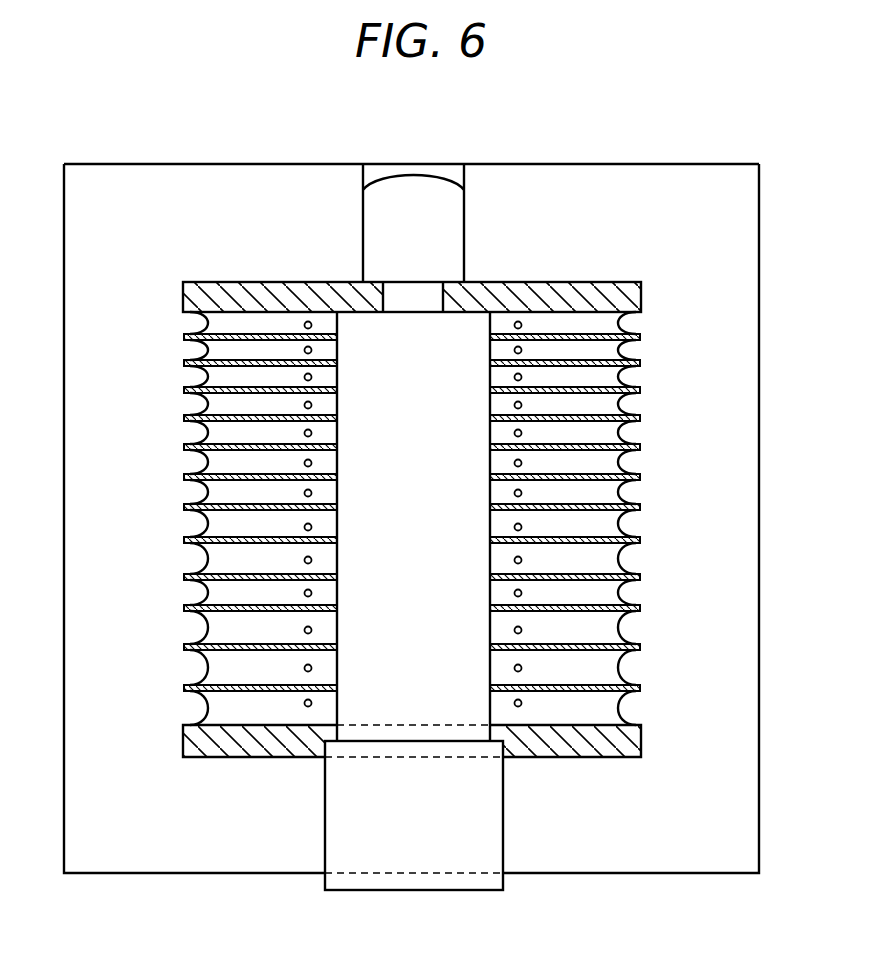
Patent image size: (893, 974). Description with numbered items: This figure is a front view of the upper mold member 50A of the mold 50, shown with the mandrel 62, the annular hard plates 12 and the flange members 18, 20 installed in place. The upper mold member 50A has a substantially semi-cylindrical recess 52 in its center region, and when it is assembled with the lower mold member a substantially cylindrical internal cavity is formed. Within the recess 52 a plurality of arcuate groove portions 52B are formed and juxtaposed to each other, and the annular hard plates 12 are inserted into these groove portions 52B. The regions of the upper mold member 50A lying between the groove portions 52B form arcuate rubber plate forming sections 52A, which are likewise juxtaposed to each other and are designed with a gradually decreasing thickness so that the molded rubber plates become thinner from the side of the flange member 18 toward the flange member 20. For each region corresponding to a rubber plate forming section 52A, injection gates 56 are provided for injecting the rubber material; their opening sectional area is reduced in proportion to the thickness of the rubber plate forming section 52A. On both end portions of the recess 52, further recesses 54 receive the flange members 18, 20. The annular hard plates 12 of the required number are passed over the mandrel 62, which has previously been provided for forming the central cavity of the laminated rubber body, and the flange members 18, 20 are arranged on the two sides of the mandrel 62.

The mold 50 is at (568, 160).
The upper mold member 50A is at (618, 165).
The flange member 20 is at (612, 283).
The further recesses 54 is at (636, 285).
The injection gates 56 is at (306, 375).
The annular hard plates 12 is at (640, 373).
The substantially semi-cylindrical recess 52 is at (592, 598).
The rubber plate forming sections 52A is at (615, 497).
The arcuate groove portions 52B is at (627, 410).
The flange member 18 is at (596, 748).
The mandrel 62 is at (360, 702).